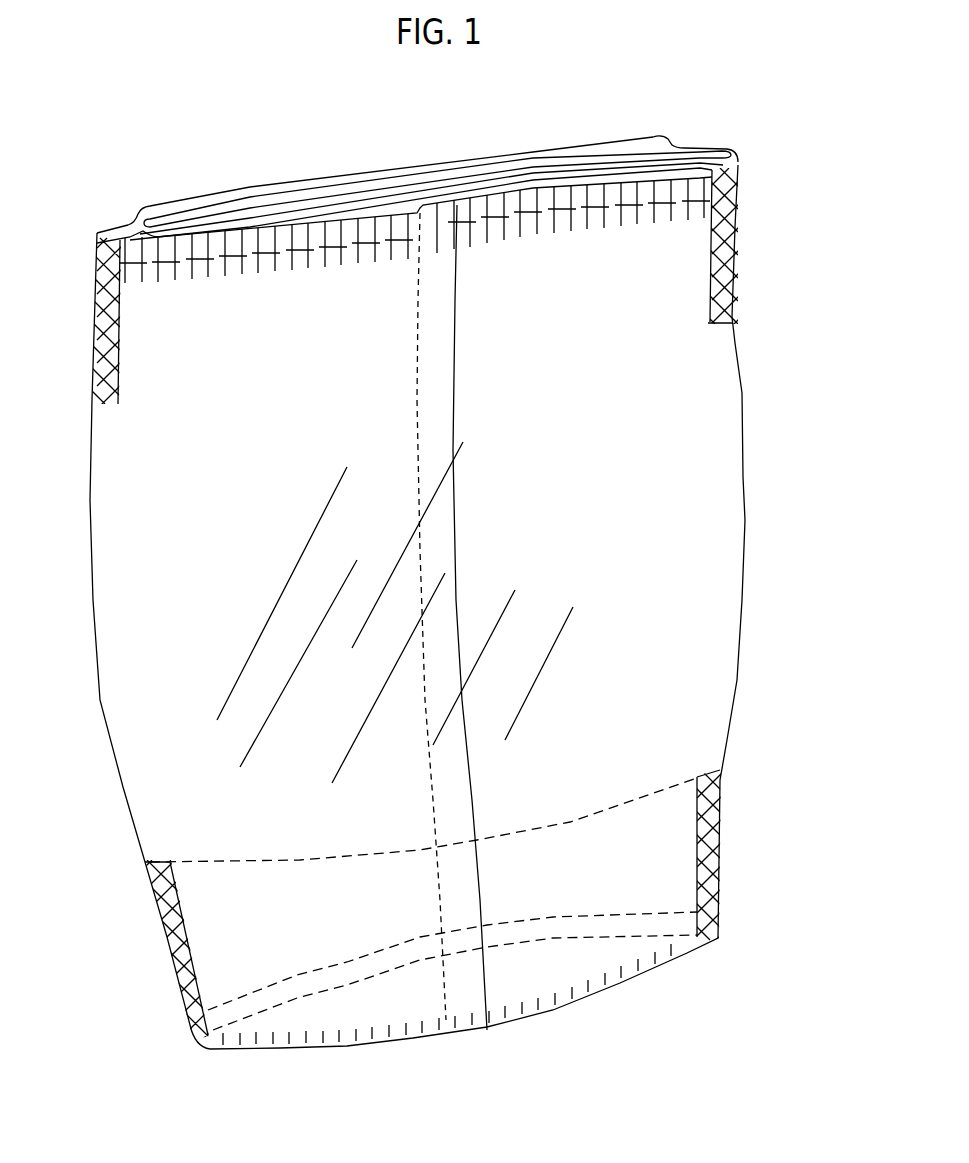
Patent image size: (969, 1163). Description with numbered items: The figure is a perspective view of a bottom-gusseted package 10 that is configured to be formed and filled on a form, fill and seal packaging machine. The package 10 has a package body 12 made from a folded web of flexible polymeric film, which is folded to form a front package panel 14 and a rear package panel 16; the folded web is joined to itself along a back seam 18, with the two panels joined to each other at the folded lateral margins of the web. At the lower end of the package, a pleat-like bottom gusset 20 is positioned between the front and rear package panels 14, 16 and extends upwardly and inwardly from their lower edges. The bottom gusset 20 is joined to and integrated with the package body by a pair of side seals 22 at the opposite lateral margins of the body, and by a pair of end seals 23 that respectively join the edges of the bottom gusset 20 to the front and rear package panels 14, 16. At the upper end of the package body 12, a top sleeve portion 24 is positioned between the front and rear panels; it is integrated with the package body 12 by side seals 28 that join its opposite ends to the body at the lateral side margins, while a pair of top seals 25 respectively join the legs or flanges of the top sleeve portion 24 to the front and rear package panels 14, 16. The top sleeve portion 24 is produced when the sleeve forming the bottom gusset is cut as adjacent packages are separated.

The bottom-gusseted package 10 is at (790, 122).
The package body 12 is at (752, 426).
The front package panel 14 is at (230, 192).
The rear package panel 16 is at (604, 527).
The back seam 18 is at (455, 522).
The bottom gusset 20 is at (570, 822).
The side seals 22 is at (162, 942).
The end seals 23 is at (300, 985).
The top sleeve portion 24 is at (480, 177).
The top seals 25 is at (310, 258).
The side seals 28 is at (93, 314).